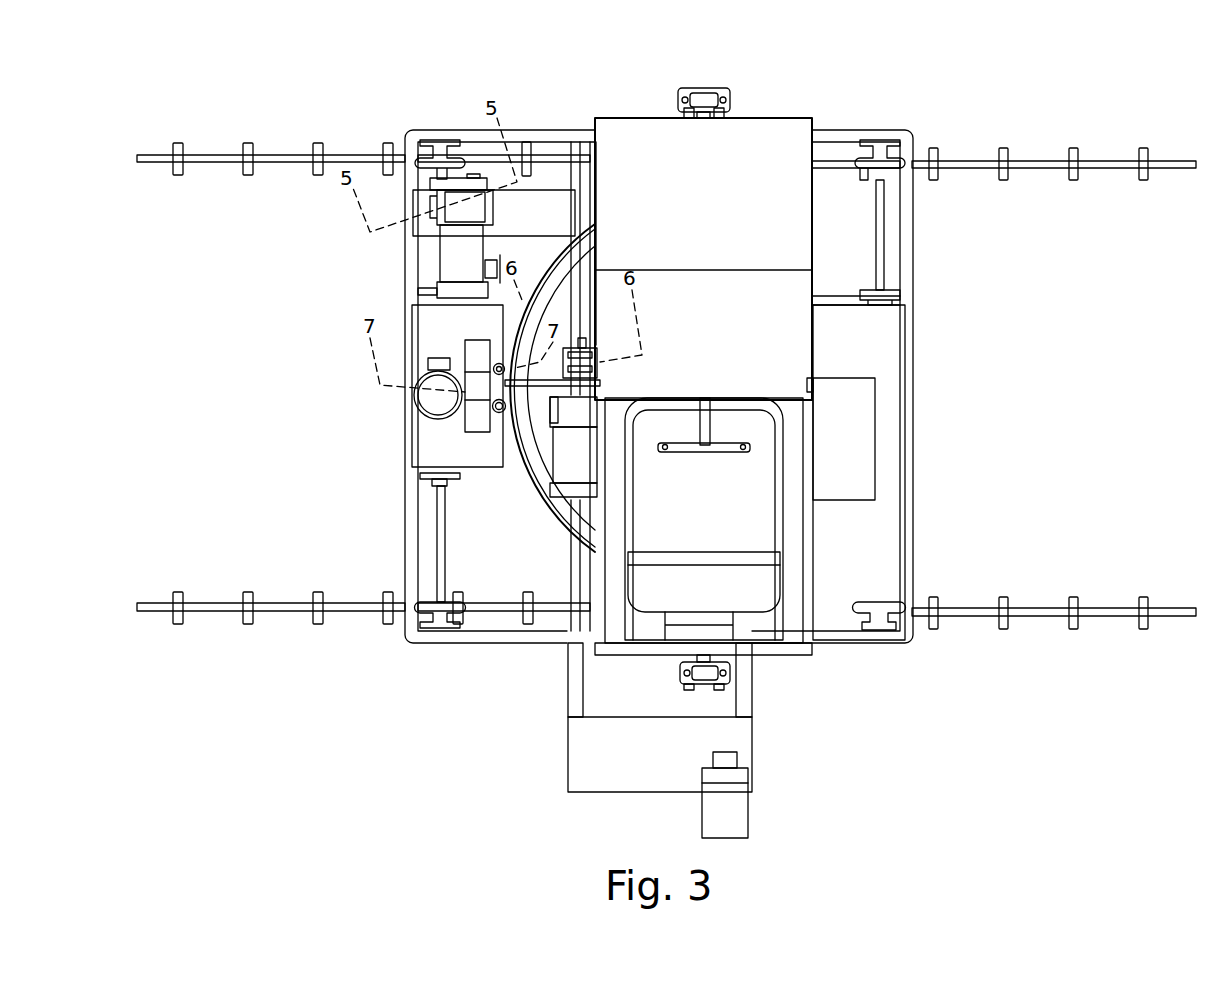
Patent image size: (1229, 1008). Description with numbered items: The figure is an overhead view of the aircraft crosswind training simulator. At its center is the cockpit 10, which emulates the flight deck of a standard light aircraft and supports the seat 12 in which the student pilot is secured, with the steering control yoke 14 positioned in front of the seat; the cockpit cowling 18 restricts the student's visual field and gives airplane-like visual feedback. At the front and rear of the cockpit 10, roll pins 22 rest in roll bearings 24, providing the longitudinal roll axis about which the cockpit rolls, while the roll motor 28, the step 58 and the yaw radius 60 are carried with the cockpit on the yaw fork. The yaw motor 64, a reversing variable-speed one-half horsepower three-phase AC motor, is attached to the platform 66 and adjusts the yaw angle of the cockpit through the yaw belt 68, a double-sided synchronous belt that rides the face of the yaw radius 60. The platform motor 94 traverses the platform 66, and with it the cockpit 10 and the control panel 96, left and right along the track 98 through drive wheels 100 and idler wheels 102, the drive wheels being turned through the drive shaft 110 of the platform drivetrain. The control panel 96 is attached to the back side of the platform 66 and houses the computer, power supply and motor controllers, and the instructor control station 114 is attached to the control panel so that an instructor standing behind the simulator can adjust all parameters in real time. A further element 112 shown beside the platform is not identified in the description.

The cockpit 10 is at (790, 556).
The seat 12 is at (670, 572).
The steering control yoke 14 is at (725, 452).
The cockpit cowling 18 is at (770, 130).
The roll pins 22 is at (700, 100).
The roll bearings 24 is at (722, 96).
The roll motor 28 is at (570, 488).
The step 58 is at (855, 415).
The yaw radius 60 is at (572, 265).
The yaw motor 64 is at (440, 405).
The platform 66 is at (900, 472).
The yaw belt 68 is at (484, 380).
The platform motor 94 is at (455, 270).
The control panel 96 is at (590, 755).
The track 98 is at (1100, 163).
The drive wheels 100 is at (440, 158).
The idler wheels 102 is at (885, 160).
The drive shaft 110 is at (440, 525).
The right rod 112 is at (880, 240).
The instructor control station 114 is at (735, 815).